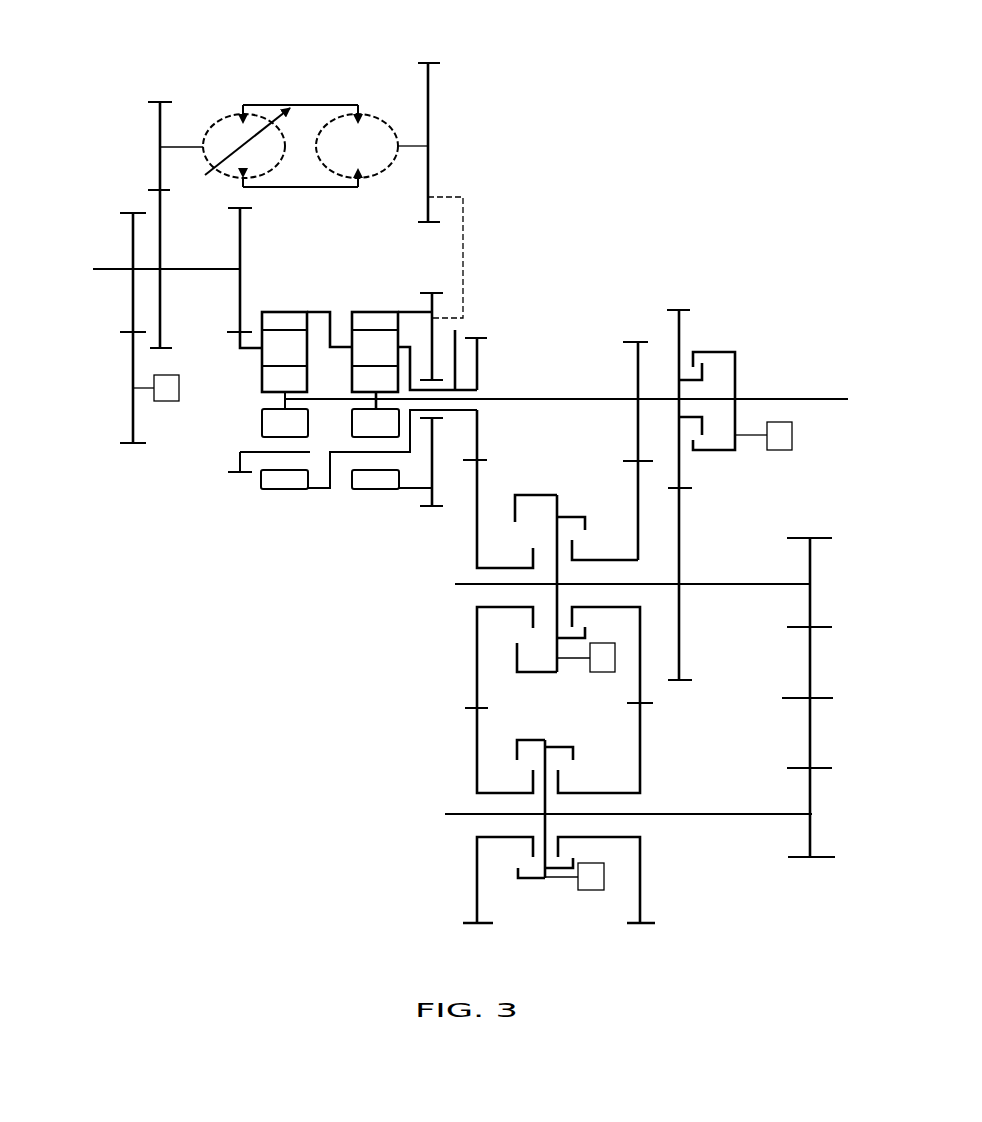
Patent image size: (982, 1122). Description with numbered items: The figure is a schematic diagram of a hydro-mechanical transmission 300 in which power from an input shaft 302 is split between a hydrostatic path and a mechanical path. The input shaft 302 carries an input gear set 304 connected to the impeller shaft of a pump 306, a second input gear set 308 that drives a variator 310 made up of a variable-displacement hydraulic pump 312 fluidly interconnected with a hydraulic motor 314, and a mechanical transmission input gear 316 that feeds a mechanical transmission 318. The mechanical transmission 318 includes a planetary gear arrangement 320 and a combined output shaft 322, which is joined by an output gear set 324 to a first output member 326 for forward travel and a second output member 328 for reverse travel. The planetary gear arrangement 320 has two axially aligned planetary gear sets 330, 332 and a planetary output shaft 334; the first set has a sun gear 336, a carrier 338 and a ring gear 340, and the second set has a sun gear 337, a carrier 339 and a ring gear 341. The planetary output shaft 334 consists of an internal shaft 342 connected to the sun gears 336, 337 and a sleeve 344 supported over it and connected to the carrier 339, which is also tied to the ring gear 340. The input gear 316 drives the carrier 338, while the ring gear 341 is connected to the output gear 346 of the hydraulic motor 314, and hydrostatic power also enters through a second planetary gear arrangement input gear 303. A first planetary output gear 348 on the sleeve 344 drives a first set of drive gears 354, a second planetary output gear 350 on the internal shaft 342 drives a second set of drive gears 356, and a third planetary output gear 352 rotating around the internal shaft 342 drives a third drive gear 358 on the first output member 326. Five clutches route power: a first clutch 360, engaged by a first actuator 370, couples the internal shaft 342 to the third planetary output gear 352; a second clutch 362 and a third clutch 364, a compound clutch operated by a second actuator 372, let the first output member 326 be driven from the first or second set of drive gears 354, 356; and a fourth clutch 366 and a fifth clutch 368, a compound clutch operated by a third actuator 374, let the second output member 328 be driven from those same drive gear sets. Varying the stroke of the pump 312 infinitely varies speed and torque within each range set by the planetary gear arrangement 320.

The hydro-mechanical transmission 300 is at (683, 130).
The input shaft 302 is at (113, 268).
The second planetary gear arrangement input gear 303 is at (433, 500).
The input gear set 304 is at (133, 340).
The pump 306 is at (160, 403).
The second input gear set 308 is at (160, 203).
The variator 310 is at (307, 72).
The variable-displacement hydraulic pump 312 is at (223, 118).
The hydraulic motor 314 is at (378, 117).
The mechanical transmission input gear 316 is at (242, 238).
The mechanical transmission 318 is at (343, 722).
The planetary gear arrangement 320 is at (288, 600).
The combined output shaft 322 is at (822, 697).
The output gear set 324 is at (810, 602).
The first output member 326 is at (468, 585).
The second output member 328 is at (458, 815).
The first planetary gear set 330 is at (292, 507).
The second planetary gear set 332 is at (378, 505).
The planetary output shaft 334 is at (640, 263).
The sun gear 336 is at (262, 423).
The sun gear 337 is at (352, 430).
The carrier 338 is at (260, 360).
The carrier 339 is at (350, 355).
The ring gear 340 is at (278, 317).
The ring gear 341 is at (365, 318).
The internal shaft 342 is at (517, 398).
The sleeve 344 is at (455, 330).
The output gear 346 is at (430, 108).
The first planetary output gear 348 is at (477, 368).
The second planetary output gear 350 is at (638, 353).
The third planetary output gear 352 is at (682, 330).
The first set of drive gears 354 is at (477, 718).
The second set of drive gears 356 is at (643, 720).
The third drive gear 358 is at (679, 530).
The first clutch 360 is at (737, 370).
The second clutch 362 is at (520, 490).
The third clutch 364 is at (570, 513).
The fourth clutch 366 is at (525, 737).
The fifth clutch 368 is at (557, 745).
The first actuator 370 is at (777, 450).
The second actuator 372 is at (603, 672).
The third actuator 374 is at (588, 892).